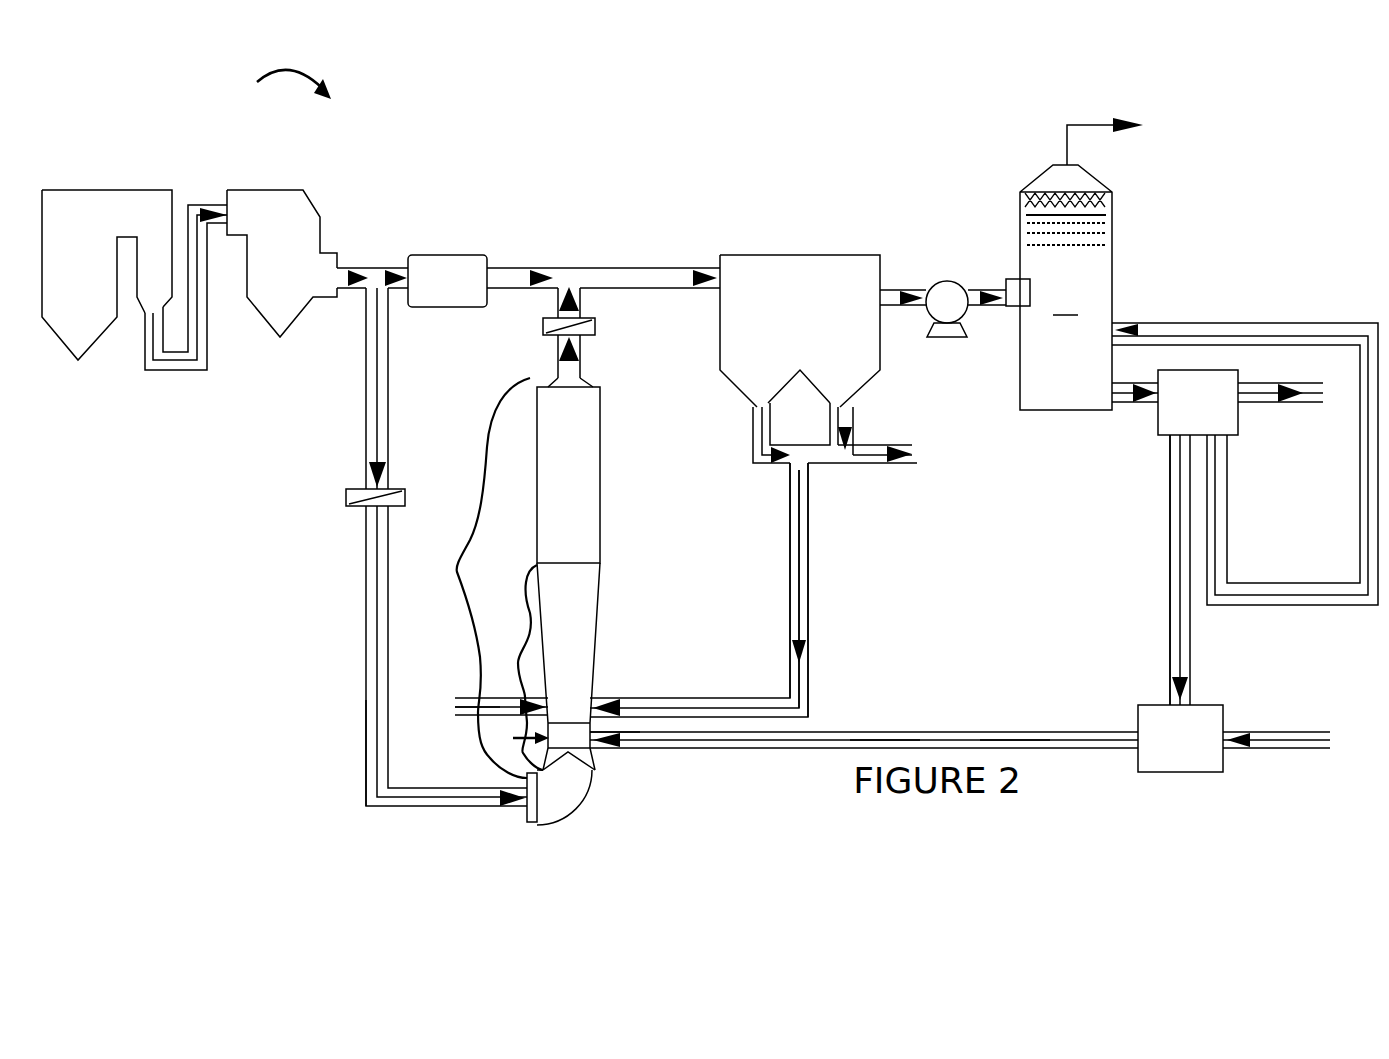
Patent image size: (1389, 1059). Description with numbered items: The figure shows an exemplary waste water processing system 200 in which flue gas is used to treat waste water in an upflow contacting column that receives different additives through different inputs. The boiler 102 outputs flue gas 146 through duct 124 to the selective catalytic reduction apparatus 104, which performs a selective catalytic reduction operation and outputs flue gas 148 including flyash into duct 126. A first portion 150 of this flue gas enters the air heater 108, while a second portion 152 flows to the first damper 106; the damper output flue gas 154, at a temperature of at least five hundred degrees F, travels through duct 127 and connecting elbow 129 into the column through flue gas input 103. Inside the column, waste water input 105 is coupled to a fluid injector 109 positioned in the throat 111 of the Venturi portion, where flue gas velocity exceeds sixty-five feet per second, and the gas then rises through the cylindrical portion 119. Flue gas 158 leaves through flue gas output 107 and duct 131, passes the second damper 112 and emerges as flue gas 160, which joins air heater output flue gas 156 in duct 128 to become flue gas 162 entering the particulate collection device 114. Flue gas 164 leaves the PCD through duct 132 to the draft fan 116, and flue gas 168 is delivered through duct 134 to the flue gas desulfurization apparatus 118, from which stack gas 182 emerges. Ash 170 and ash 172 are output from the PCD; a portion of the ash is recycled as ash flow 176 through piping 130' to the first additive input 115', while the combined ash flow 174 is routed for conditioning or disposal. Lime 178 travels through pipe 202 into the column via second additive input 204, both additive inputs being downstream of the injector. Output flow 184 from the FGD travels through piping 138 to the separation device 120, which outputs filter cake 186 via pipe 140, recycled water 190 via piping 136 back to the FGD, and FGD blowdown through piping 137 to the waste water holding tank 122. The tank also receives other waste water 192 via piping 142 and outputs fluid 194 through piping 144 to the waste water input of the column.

The boiler 102 is at (112, 193).
The flue gas input 103 is at (570, 762).
The selective catalytic reduction (SCR) apparatus 104 is at (268, 192).
The waste water input 105 is at (582, 737).
The first damper 106 is at (349, 506).
The flue gas output 107 is at (567, 386).
The air heater (AH) 108 is at (445, 255).
The fluid injector 109 is at (582, 743).
The throat 111 is at (516, 737).
The second damper 112 is at (543, 325).
The particulate collection device (PCD) 114 is at (795, 258).
The first additive input 115' is at (699, 590).
The draft fan 116 is at (942, 279).
The flue gas desulfurization (FGD) apparatus 118 is at (1113, 275).
The cylindrical portion 119 is at (597, 518).
The separation device 120 is at (1238, 420).
The waste water holding tank 122 is at (1213, 705).
The duct 124 is at (155, 370).
The duct 126 is at (366, 358).
The duct 127 is at (368, 702).
The duct 128 is at (575, 268).
The connecting elbow 129 is at (570, 810).
The piping 130' is at (834, 589).
The duct 131 is at (557, 347).
The duct 132 is at (890, 308).
The duct 134 is at (997, 304).
The piping 136 is at (1250, 323).
The piping 137 is at (1170, 565).
The piping 138 is at (1148, 403).
The pipe 140 is at (1267, 403).
The piping 142 is at (1305, 732).
The piping 144 is at (1012, 730).
The output flue gas 146 is at (172, 362).
The flue gas 148 is at (362, 269).
The first portion of flue gas 150 is at (388, 270).
The second portion of flue gas 152 is at (377, 391).
The flue gas 154 is at (377, 673).
The output flue gas 156 is at (518, 277).
The flue gas 158 is at (577, 353).
The flue gas 160 is at (573, 297).
The flue gas 162 is at (665, 277).
The flue gas 164 is at (908, 295).
The flue gas 168 is at (985, 288).
The ash 170 is at (762, 430).
The ash 172 is at (840, 432).
The ash flow 174 is at (907, 452).
The ash flow / FGD blowdown 176 is at (798, 585).
The lime 178 is at (470, 712).
The stack gas 182 is at (1095, 125).
The output flow 184 is at (1142, 385).
The filter cake 186 is at (1270, 392).
The recycled water 190 is at (1192, 333).
The other input waste water 192 is at (1277, 740).
The waste water flow / fluid 194 is at (883, 738).
The waste water processing system 200 is at (286, 95).
The pipe 202 is at (465, 698).
The second additive input 204 is at (547, 705).